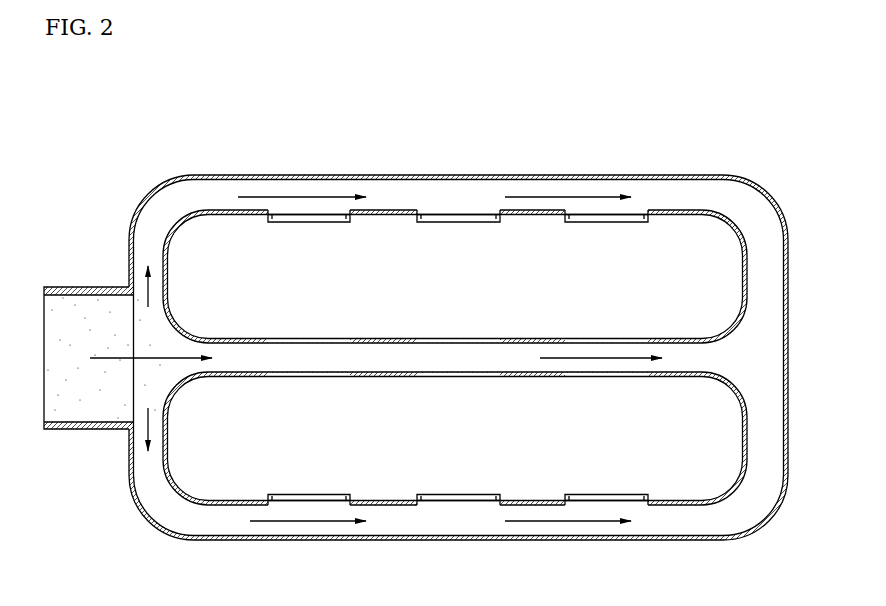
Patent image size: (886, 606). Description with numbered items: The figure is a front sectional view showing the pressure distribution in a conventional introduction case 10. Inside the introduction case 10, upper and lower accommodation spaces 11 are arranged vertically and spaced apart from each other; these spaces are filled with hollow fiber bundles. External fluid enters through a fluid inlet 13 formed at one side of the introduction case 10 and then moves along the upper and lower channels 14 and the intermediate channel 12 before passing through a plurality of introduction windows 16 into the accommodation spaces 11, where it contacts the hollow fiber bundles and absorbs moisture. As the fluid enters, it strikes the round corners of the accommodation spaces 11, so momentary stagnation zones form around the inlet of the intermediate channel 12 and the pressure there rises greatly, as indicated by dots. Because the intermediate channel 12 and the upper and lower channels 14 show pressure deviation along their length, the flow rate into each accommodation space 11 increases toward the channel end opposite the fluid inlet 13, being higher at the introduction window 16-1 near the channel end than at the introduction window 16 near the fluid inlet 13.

The introduction case 10 is at (674, 146).
The accommodation space 11 is at (180, 418).
The intermediate channel 12 is at (378, 378).
The fluid inlet 13 is at (70, 310).
The upper and lower channels 14 is at (408, 205).
The introduction window 16 is at (337, 340).
The introduction window 16-1 is at (628, 340).